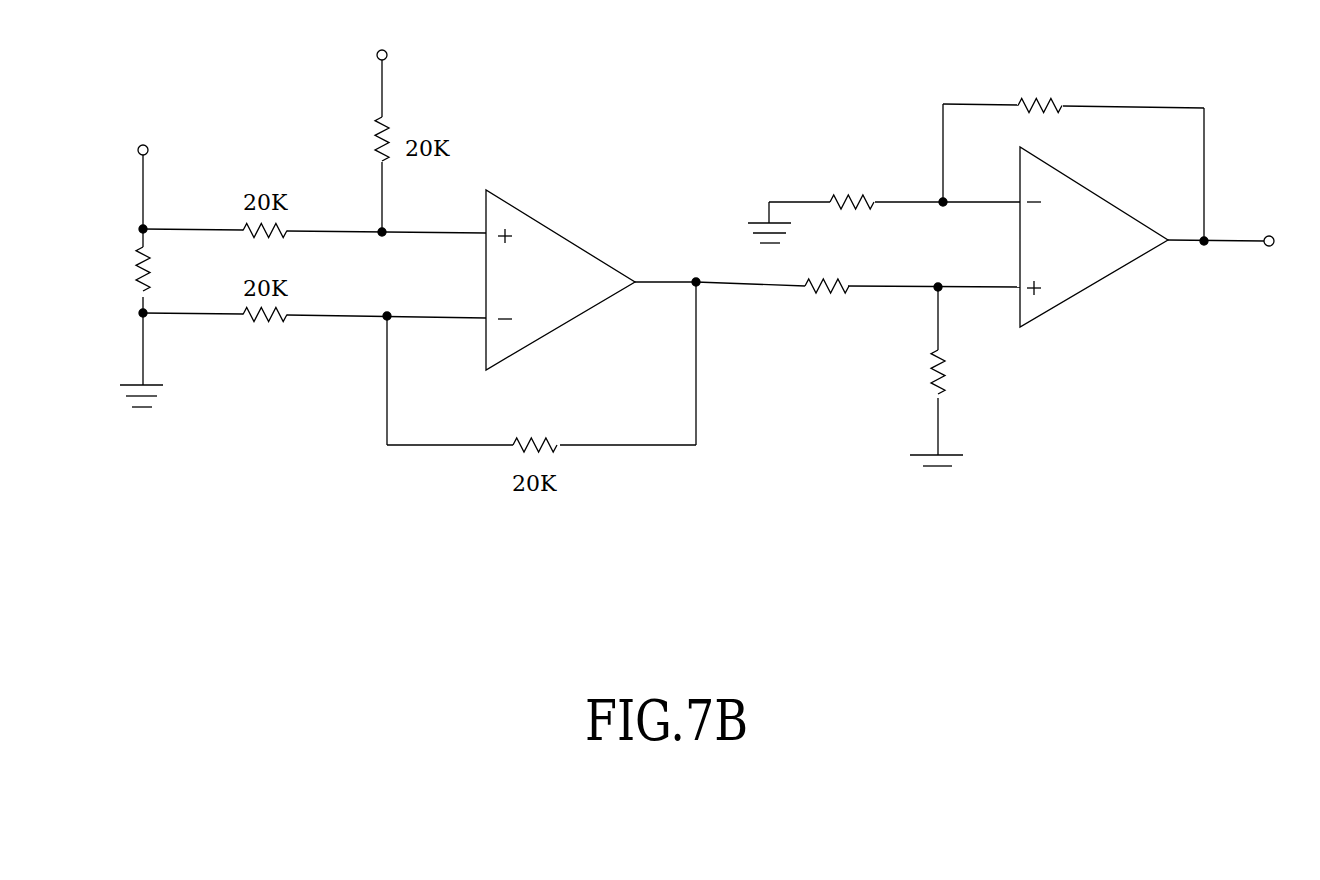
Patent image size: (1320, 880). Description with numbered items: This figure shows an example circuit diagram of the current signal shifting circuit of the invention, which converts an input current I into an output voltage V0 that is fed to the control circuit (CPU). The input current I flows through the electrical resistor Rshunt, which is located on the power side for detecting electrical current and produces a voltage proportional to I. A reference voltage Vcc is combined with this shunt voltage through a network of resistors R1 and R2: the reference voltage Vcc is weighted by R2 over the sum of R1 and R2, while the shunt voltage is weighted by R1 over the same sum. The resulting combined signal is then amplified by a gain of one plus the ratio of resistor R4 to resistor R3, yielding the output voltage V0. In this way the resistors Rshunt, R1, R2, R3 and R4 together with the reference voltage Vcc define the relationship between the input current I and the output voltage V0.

The input current I is at (120, 143).
The electrical resistor Rshunt is at (105, 318).
The resistor R1 is at (959, 371).
The resistor R2 is at (858, 309).
The resistor R3 is at (884, 197).
The resistor R4 is at (1073, 151).
The reference voltage Vcc is at (965, 460).
The output voltage V0 is at (1242, 239).